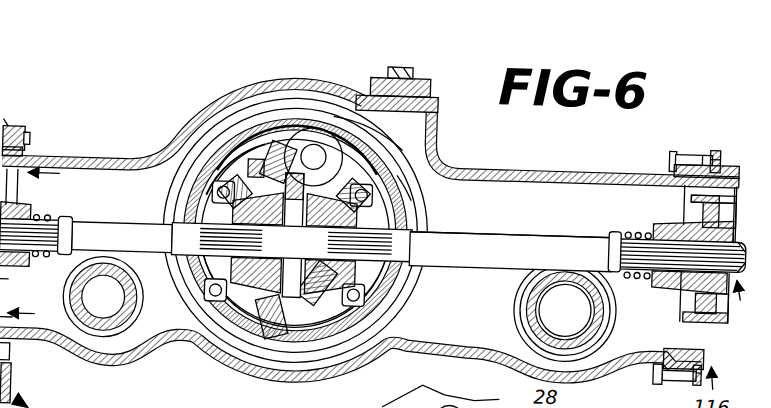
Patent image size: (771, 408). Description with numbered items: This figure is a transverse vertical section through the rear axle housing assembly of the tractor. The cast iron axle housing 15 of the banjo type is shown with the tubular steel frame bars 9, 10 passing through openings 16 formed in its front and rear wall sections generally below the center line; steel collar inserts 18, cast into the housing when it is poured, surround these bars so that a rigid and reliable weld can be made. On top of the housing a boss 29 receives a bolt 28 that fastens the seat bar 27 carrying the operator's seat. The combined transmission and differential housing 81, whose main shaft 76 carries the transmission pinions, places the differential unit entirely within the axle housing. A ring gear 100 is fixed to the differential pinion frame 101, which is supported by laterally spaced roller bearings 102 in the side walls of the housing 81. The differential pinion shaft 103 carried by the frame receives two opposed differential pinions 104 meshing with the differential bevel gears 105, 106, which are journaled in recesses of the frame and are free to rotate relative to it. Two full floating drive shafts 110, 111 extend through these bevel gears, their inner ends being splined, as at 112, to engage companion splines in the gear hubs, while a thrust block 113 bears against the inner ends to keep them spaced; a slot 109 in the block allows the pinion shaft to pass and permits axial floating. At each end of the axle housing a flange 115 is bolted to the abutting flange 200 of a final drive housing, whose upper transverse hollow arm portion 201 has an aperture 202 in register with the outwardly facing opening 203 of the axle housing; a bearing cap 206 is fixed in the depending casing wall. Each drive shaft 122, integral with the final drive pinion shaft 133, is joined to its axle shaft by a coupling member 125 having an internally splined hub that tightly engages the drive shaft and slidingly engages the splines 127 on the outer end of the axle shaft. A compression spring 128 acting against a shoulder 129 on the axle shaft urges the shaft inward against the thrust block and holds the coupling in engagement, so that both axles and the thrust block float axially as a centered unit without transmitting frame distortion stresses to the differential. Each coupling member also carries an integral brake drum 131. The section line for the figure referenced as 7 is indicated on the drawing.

The section line arrows 7 is at (375, 276).
The tubular frame bar 9 is at (138, 320).
The tubular frame bar 10 is at (520, 311).
The axle housing 15 is at (291, 336).
The openings 16 is at (98, 335).
The steel collar inserts 18 is at (126, 346).
The seat bar 27 is at (427, 86).
The bolt 28 is at (397, 70).
The boss 29 is at (433, 114).
The main shaft 76 is at (312, 158).
The housing 81 is at (287, 170).
The ring gear 100 is at (264, 332).
The differential pinion frame 101 is at (270, 150).
The roller bearings 102 is at (178, 212).
The differential pinion shaft 103 is at (330, 187).
The differential pinions 104 is at (248, 180).
The differential bevel gear 105 is at (220, 306).
The differential bevel gear 106 is at (329, 302).
The slot 109 is at (405, 186).
The drive shaft 110 is at (116, 232).
The drive shaft 111 is at (527, 248).
The splines 112 is at (108, 240).
The thrust block 113 is at (300, 322).
The flanges 115 is at (17, 143).
The drive shaft 122 is at (734, 316).
The coupling member 125 is at (10, 221).
The splines 127 is at (43, 267).
The compression spring 128 is at (50, 226).
The shoulder 129 is at (66, 228).
The brake drum 131 is at (2, 300).
The shaft 133 is at (12, 366).
The flanges 200 is at (12, 138).
The upper transverse hollow arm portion 201 is at (736, 168).
The aperture 202 is at (28, 167).
The opening 203 is at (28, 150).
The bearing cap 206 is at (15, 391).